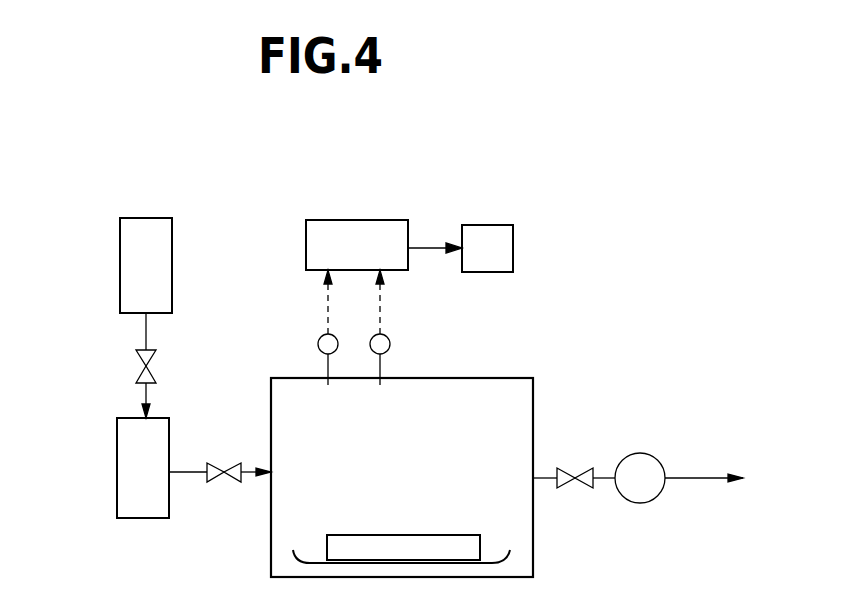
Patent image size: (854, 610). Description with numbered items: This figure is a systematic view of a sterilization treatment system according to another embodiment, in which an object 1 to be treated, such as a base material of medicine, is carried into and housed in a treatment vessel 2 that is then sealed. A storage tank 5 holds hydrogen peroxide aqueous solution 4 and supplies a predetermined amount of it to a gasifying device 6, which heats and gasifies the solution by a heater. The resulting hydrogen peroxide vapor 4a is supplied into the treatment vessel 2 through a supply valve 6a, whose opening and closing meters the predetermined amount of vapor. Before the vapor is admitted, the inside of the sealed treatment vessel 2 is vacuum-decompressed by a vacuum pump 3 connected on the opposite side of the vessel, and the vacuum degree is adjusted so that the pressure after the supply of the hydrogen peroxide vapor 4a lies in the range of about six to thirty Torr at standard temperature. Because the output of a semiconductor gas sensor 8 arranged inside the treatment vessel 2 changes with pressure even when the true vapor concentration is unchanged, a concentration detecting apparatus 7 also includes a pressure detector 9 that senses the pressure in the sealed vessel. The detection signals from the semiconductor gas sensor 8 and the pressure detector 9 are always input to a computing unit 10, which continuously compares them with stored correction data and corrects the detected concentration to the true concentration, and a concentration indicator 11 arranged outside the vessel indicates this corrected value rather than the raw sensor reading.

The object to be treated 1 is at (480, 543).
The treatment vessel 2 is at (533, 410).
The vacuum pump 3 is at (640, 453).
The hydrogen peroxide aqueous solution 4 is at (150, 411).
The hydrogen peroxide vapor 4a is at (262, 485).
The storage tank 5 is at (120, 248).
The gasifying device 6 is at (117, 461).
The supply valve 6a is at (225, 466).
The concentration detecting apparatus 7 is at (520, 247).
The semiconductor gas sensor 8 is at (319, 339).
The pressure detector 9 is at (389, 340).
The computing unit 10 is at (350, 220).
The concentration indicator 11 is at (493, 225).